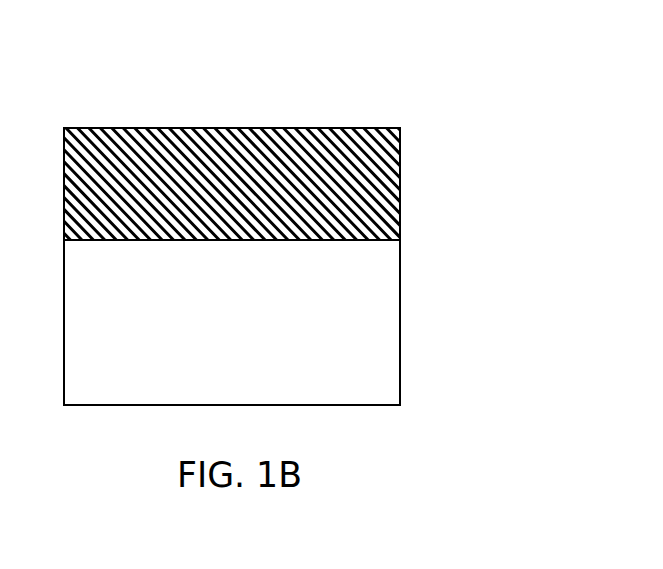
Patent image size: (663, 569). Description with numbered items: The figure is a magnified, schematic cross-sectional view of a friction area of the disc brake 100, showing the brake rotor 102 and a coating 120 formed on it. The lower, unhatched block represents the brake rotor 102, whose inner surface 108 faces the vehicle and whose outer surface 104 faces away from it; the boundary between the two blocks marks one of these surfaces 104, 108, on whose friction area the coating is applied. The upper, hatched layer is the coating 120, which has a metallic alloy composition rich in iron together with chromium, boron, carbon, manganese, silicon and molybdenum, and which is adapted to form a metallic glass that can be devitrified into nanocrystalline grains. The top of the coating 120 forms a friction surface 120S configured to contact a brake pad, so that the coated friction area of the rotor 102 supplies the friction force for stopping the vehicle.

The disc brake 100 is at (371, 57).
The brake rotor 102 is at (232, 266).
The outer surface 104 is at (388, 242).
The inner surface 108 is at (278, 261).
The coating 120 is at (400, 180).
The friction surface 120S is at (375, 129).